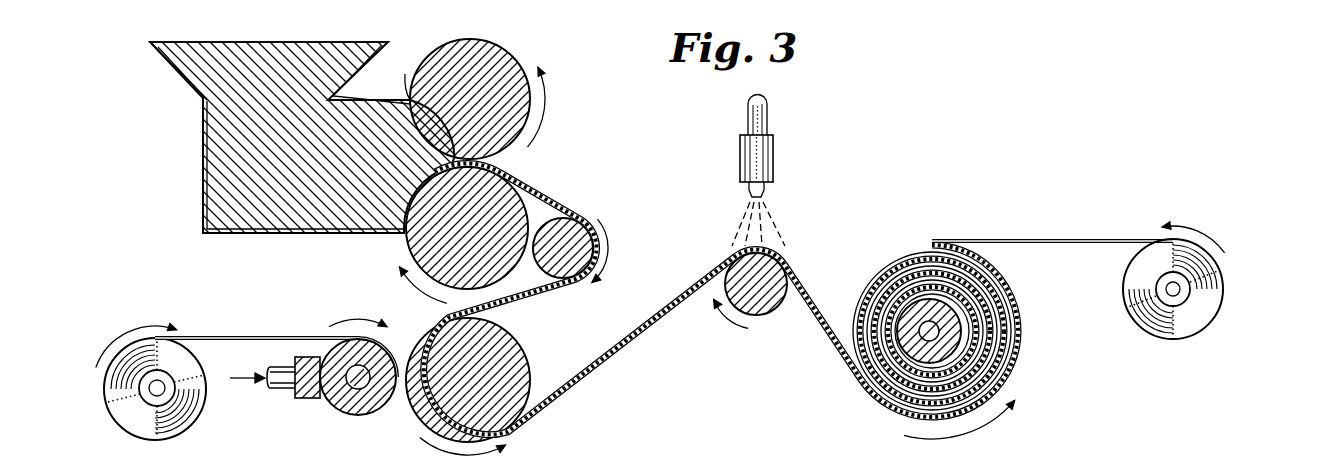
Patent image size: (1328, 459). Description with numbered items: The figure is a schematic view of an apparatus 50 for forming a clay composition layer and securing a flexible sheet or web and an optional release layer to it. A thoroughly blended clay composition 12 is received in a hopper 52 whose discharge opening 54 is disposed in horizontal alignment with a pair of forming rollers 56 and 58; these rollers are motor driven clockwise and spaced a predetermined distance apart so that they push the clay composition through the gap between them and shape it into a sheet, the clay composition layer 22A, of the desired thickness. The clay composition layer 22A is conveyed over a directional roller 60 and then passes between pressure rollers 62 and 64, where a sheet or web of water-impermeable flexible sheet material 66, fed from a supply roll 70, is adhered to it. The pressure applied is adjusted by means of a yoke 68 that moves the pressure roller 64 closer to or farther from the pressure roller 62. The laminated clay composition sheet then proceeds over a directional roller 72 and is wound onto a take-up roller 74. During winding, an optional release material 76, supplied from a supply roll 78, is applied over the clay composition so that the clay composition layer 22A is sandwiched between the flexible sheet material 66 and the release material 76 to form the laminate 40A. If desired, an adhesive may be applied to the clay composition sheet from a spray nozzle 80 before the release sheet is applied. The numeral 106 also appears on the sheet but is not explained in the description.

The clay composition 12 is at (225, 187).
The clay composition layer 22A is at (546, 194).
The laminate 40A is at (974, 345).
The apparatus 50 is at (917, 131).
The hopper 52 is at (302, 137).
The discharge opening 54 is at (393, 79).
The forming roller 56 is at (497, 62).
The forming roller 58 is at (410, 232).
The directional roller 60 is at (567, 225).
The pressure roller 62 is at (530, 352).
The pressure roller 64 is at (374, 408).
The water-impermeable flexible sheet material 66 is at (230, 340).
The yoke 68 is at (300, 398).
The supply roll 70 is at (126, 412).
The directional roller 72 is at (773, 307).
The take-up roller 74 is at (960, 297).
The release material 76 is at (1021, 240).
The supply roll 78 is at (1212, 306).
The spray nozzle 80 is at (749, 153).
The reference numeral 106 is at (1214, 454).